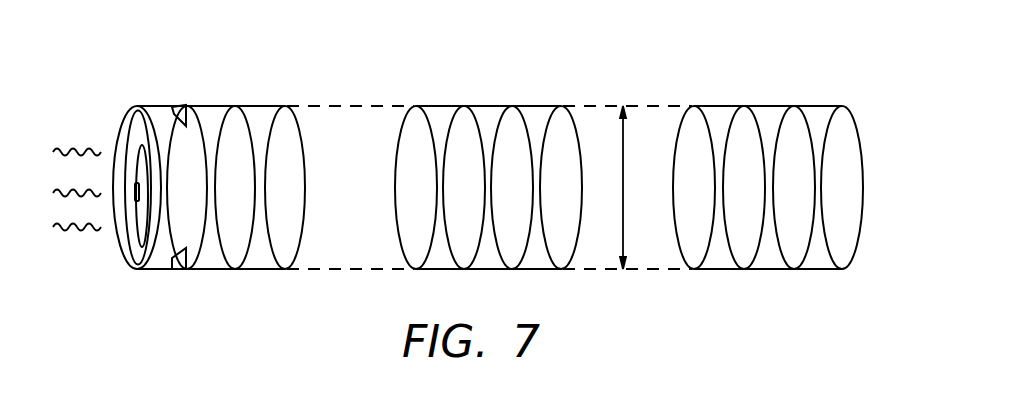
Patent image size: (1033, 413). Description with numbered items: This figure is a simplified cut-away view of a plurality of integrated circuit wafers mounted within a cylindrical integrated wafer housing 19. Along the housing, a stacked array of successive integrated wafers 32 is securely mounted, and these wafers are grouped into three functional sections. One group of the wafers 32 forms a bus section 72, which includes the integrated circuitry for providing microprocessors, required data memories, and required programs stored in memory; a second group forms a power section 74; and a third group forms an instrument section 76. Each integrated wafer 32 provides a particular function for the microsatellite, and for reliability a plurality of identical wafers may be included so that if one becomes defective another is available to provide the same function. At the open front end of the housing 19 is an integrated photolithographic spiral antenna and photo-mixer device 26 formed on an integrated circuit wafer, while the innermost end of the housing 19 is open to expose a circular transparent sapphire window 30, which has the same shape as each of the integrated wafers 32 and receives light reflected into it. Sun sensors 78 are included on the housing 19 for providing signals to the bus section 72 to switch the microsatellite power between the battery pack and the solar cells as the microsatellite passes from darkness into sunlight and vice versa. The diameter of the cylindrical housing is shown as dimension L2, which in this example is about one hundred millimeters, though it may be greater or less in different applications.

The bus section 72 is at (122, 65).
The power section 74 is at (413, 65).
The instrument section 76 is at (875, 65).
The integrated wafer housing 19 is at (218, 106).
The integrated wafers 32 is at (197, 198).
The sun sensors 78 is at (174, 110).
The integrated photolithographic spiral antenna and photo-mixer device 26 is at (133, 249).
The transparent sapphire window 30 is at (855, 166).
The diameter of the cylindrical housing L2 is at (638, 187).